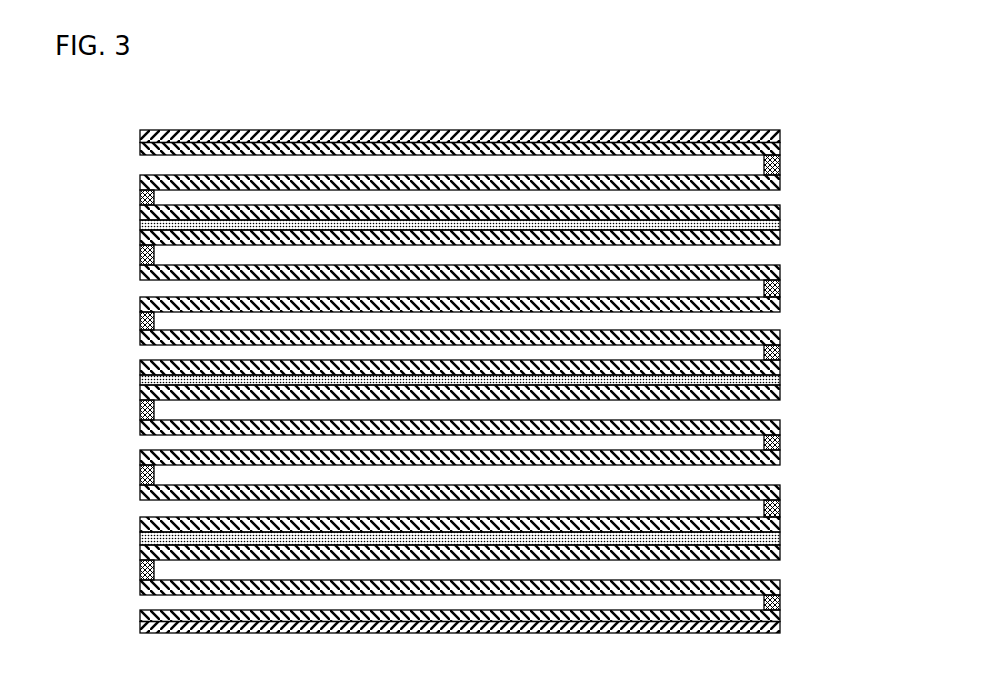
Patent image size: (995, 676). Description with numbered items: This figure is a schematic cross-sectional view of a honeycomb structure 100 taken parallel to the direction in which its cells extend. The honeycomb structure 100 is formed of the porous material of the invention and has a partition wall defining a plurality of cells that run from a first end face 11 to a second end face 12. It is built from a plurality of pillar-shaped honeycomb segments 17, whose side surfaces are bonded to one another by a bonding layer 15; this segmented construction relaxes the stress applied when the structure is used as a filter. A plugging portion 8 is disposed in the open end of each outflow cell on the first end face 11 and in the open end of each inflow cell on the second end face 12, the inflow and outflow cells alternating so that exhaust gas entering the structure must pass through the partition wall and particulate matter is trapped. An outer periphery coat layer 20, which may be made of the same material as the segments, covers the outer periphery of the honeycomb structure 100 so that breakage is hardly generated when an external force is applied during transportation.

The honeycomb structure 100 is at (848, 88).
The outer periphery coat layer 20 is at (405, 130).
The first end face 11 is at (140, 153).
The second end face 12 is at (782, 147).
The bonding layer 15 is at (782, 226).
The honeycomb segment 17 is at (137, 253).
The plugging portion 8 is at (140, 480).